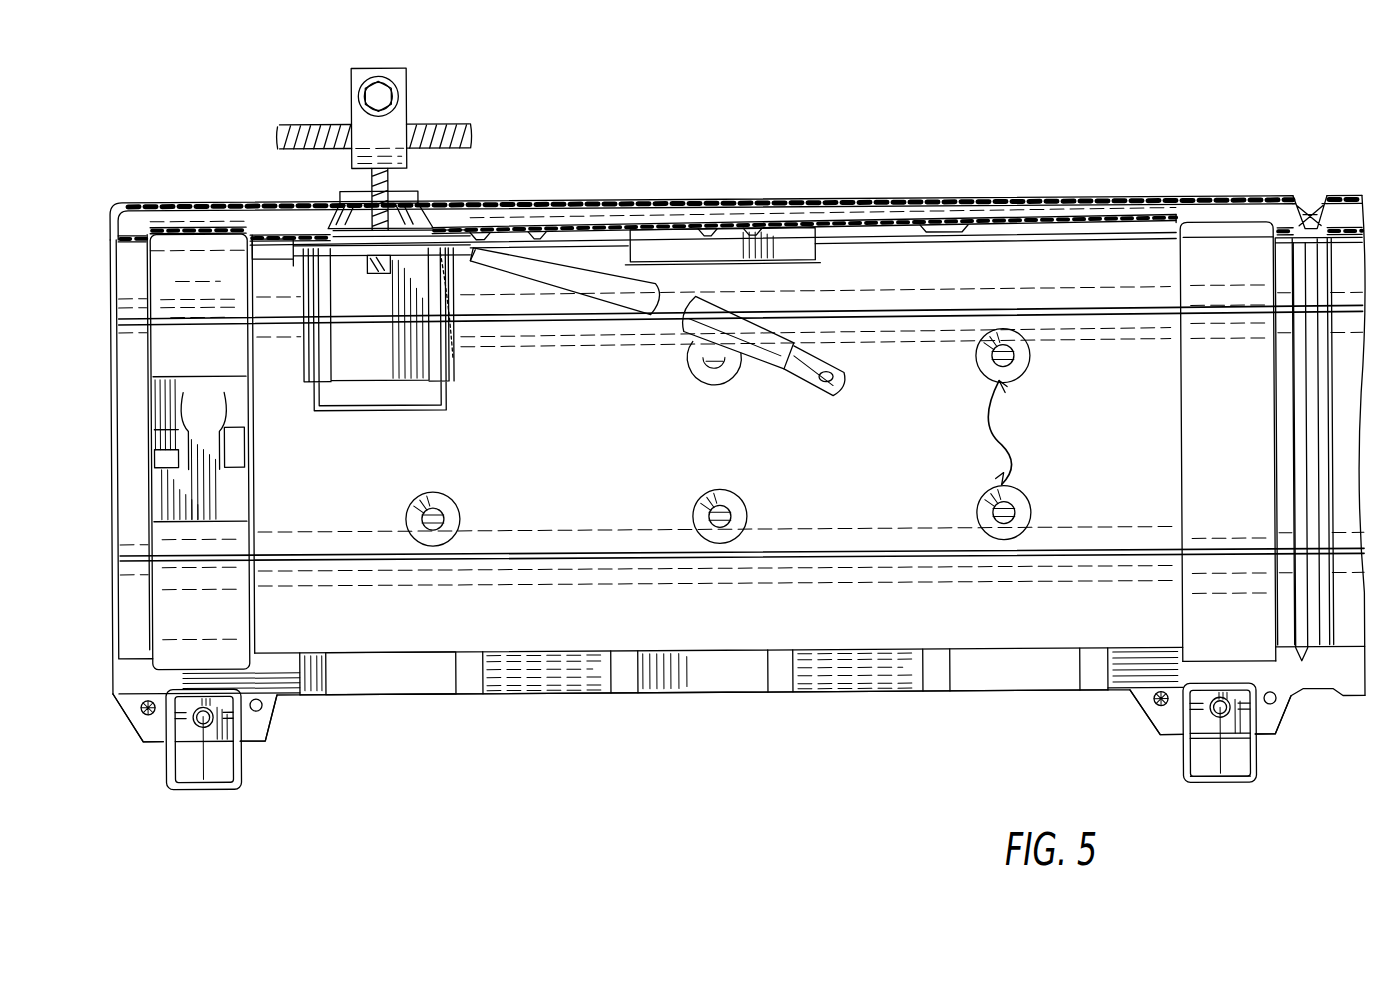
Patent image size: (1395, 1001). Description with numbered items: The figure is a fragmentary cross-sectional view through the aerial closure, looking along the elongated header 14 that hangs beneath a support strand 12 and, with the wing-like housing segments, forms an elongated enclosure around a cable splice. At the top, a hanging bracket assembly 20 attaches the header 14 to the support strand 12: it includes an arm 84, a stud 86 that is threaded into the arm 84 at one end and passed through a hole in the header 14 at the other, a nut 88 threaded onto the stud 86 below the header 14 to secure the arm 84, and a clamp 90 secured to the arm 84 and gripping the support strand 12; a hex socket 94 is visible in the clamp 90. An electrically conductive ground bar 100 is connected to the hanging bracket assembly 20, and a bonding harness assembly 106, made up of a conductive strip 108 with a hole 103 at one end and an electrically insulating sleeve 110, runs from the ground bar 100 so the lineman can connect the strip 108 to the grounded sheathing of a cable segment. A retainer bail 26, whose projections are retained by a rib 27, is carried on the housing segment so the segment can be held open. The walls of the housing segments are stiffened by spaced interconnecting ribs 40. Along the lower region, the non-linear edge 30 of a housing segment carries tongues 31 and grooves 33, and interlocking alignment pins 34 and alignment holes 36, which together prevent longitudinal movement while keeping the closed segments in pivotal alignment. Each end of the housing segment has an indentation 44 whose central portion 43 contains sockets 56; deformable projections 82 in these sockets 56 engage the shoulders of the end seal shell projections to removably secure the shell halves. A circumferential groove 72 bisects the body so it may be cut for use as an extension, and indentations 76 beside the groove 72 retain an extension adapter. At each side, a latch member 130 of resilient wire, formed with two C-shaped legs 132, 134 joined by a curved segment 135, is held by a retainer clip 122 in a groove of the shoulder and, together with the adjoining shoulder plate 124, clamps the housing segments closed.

The support strand 12 is at (305, 125).
The header 14 is at (1040, 195).
The hanging bracket assembly 20 is at (410, 66).
The retainer bail 26 is at (440, 412).
The rib 27 is at (445, 300).
The non-linear edge 30 is at (505, 680).
The tongue 31 is at (972, 660).
The groove 33 is at (560, 660).
The alignment pin 34 is at (140, 717).
The alignment hole 36 is at (262, 708).
The interconnecting rib 40 is at (735, 500).
The central portion 43 is at (230, 507).
The indentation 44 is at (198, 240).
The socket 56 is at (245, 445).
The circumferential groove 72 is at (1303, 215).
The indentation 76 is at (1226, 250).
The deformable projection 82 is at (220, 410).
The arm 84 is at (350, 258).
The stud 86 is at (398, 280).
The nut 88 is at (372, 276).
The clamp 90 is at (362, 85).
The hex socket 94 is at (395, 95).
The ground bar 100 is at (660, 248).
The pivot hole 103 is at (842, 390).
The bonding harness assembly 106 is at (628, 300).
The strip 108 is at (816, 366).
The electrically insulating sleeve 110 is at (768, 380).
The retainer clip 122 is at (210, 735).
The foot plate 124 is at (258, 722).
The latch member 130 is at (160, 764).
The C-shaped leg 132 is at (1188, 752).
The C-shaped leg 134 is at (240, 775).
The curved segment 135 is at (1222, 788).